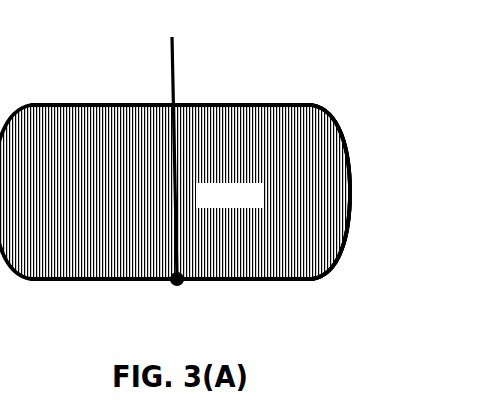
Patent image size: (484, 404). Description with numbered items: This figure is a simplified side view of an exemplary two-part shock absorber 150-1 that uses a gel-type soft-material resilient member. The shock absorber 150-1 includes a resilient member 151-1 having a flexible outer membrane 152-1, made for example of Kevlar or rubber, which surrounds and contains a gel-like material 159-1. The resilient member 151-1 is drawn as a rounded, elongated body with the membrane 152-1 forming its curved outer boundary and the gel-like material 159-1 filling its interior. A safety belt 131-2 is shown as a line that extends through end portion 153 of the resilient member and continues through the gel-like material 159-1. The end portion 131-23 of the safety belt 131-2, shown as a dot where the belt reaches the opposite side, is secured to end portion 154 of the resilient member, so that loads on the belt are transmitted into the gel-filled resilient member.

The safety belt 131-2 is at (178, 62).
The end portion of safety belt 131-23 is at (185, 289).
The end portion 153 is at (265, 101).
The flexible outer membrane 152-1 is at (334, 116).
The two-part shock absorber 150-1 is at (375, 115).
The resilient member 151-1 is at (377, 191).
The gel-like material 159-1 is at (259, 206).
The end portion 154 is at (86, 284).